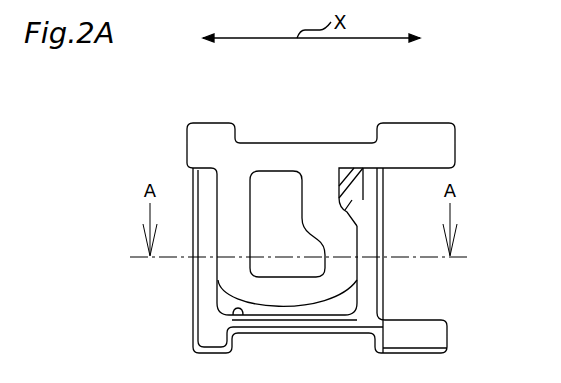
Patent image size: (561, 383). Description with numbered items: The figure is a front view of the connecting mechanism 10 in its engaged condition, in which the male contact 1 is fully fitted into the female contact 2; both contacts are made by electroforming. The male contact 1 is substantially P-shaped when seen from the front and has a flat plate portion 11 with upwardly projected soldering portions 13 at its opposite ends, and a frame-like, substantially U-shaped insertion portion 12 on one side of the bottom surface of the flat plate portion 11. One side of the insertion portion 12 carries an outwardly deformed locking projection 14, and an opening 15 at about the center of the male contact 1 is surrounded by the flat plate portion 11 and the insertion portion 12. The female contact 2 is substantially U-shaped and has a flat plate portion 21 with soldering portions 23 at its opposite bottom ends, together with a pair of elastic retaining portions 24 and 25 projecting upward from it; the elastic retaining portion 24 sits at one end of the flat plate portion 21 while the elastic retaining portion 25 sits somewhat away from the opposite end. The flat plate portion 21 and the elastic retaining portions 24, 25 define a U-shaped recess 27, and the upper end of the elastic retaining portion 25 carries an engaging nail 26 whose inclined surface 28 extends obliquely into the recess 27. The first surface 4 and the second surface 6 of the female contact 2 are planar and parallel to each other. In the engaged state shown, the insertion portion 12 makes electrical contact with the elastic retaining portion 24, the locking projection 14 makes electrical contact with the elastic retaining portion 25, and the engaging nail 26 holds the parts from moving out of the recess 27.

The male contact 1 is at (457, 131).
The female contact 2 is at (459, 323).
The first surface 4 is at (437, 147).
The second surface 6 is at (427, 323).
The connecting mechanism 10 is at (356, 118).
The flat plate portion 11 is at (280, 150).
The insertion portion 12 is at (232, 218).
The soldering portions 13 is at (215, 143).
The locking projection 14 is at (333, 287).
The opening 15 is at (275, 207).
The flat plate portion 21 is at (298, 325).
The soldering portions 23 is at (207, 337).
The elastic retaining portion 24 is at (207, 298).
The elastic retaining portion 25 is at (370, 288).
The engaging nail 26 is at (362, 193).
The recess 27 is at (233, 332).
The inclined surface 28 is at (347, 170).